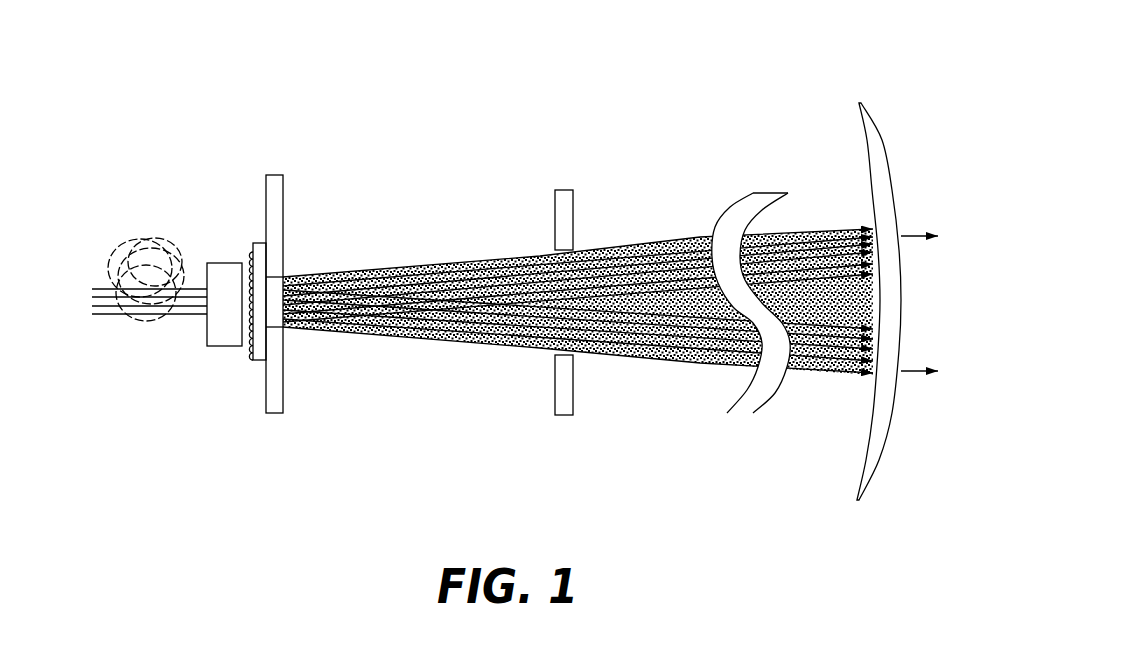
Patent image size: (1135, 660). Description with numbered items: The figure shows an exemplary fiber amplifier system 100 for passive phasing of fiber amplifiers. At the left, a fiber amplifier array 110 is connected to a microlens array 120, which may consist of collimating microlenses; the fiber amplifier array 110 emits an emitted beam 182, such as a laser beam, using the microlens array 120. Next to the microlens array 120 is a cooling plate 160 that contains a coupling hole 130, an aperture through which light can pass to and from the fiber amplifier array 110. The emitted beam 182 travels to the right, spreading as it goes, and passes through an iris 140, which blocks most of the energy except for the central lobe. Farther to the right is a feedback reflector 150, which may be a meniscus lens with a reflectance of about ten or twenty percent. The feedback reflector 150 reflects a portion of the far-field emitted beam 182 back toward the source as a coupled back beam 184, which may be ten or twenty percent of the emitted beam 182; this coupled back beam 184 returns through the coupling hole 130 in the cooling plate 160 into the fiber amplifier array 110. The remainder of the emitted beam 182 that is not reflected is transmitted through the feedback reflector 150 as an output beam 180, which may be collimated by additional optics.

The fiber amplifier system 100 is at (833, 68).
The fiber amplifier array 110 is at (195, 262).
The microlens array 120 is at (240, 353).
The coupling hole 130 is at (273, 303).
The iris 140 is at (672, 300).
The feedback reflector 150 is at (866, 161).
The cooling plate 160 is at (291, 178).
The output beam 180 is at (903, 371).
The emitted beam 182 is at (652, 357).
The coupled back beam 184 is at (432, 265).